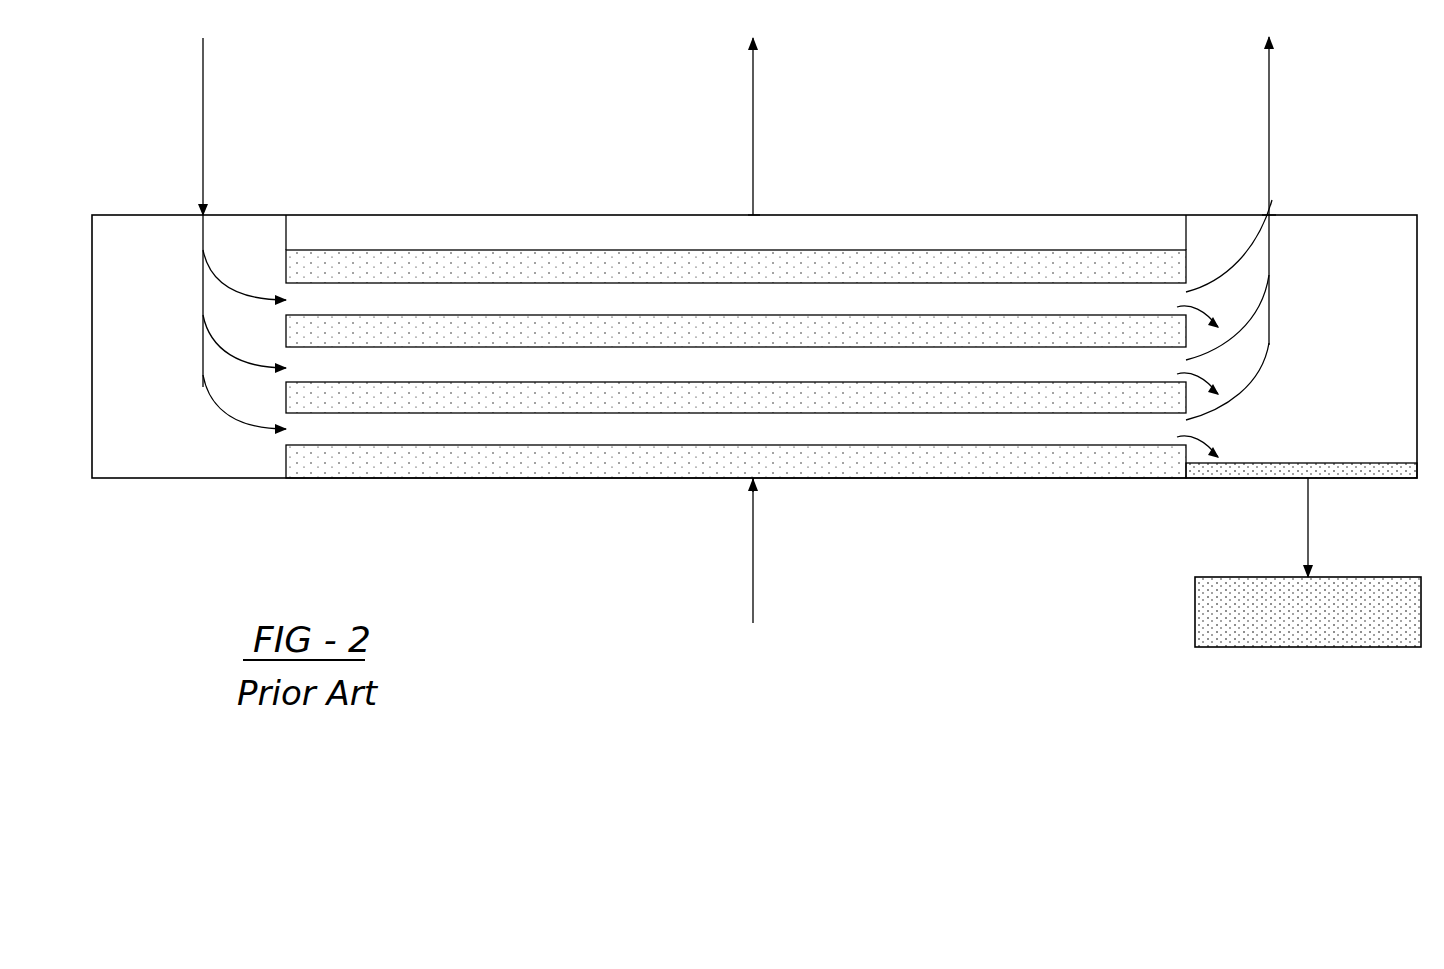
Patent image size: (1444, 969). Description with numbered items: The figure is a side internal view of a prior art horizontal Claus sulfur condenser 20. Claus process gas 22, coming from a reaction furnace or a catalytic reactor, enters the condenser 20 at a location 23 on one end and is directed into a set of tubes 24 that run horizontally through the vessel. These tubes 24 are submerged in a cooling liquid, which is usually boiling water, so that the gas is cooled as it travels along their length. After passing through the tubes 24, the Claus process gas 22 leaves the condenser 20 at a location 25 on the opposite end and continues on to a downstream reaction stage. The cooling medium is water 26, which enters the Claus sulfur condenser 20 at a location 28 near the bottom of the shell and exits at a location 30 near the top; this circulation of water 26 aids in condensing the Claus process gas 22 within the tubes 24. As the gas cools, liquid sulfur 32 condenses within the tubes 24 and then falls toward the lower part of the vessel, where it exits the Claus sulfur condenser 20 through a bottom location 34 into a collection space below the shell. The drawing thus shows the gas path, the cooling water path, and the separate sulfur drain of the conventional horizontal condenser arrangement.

The horizontal Claus sulfur condenser 20 is at (1088, 213).
The Claus process gas 22 is at (203, 98).
The gas inlet location 23 is at (203, 215).
The tubes 24 is at (593, 173).
The gas exit location 25 is at (1273, 215).
The water 26 is at (753, 110).
The water inlet location 28 is at (753, 478).
The water exit location 30 is at (753, 213).
The liquid sulfur 32 is at (1200, 312).
The bottom location 34 is at (1310, 480).